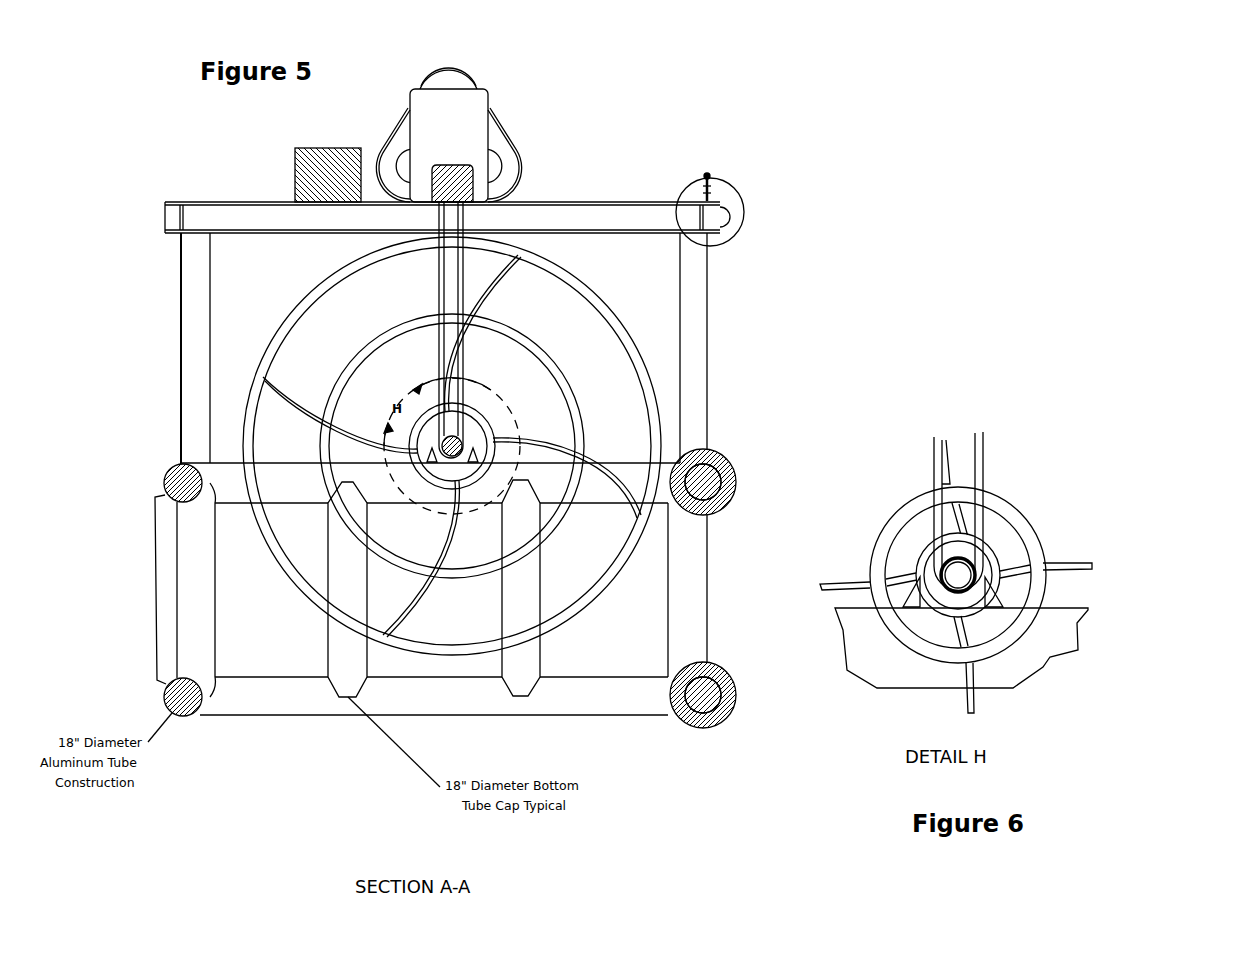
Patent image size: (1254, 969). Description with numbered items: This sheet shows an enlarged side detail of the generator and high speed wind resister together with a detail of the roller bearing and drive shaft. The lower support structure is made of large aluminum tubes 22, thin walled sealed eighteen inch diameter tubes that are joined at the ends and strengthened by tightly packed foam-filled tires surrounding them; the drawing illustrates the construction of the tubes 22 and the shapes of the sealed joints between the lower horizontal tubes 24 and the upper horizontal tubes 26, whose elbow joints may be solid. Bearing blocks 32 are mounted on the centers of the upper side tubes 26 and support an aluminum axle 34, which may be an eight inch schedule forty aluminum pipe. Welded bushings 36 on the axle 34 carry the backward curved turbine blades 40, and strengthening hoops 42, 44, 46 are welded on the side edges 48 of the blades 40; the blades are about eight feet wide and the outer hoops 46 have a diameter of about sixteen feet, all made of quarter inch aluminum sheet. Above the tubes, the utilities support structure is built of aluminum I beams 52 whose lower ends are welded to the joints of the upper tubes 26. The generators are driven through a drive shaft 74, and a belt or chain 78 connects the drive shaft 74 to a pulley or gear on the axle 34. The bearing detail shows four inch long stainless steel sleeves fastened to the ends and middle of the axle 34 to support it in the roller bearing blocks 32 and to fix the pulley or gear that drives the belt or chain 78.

In FIG. 5, the aluminum tubes 22 is at (158, 588).
In FIG. 5, the lower horizontal tubes 24 is at (163, 697).
In FIG. 5, the upper horizontal tubes 26 is at (163, 483).
In FIG. 6, the bearing blocks 32 is at (993, 552).
In FIG. 6, the aluminum axle 34 is at (948, 582).
In FIG. 6, the welded bushings 36 is at (983, 597).
In FIG. 5, the backward curved turbine blades 40 is at (594, 446).
In FIG. 5, the strengthening hoop 42 is at (493, 427).
In FIG. 5, the strengthening hoop 44 is at (533, 338).
In FIG. 5, the outer hoops 46 is at (625, 323).
In FIG. 5, the side edges 48 is at (573, 445).
In FIG. 5, the aluminum I beams 52 is at (718, 192).
In FIG. 5, the drive shaft 74 is at (455, 435).
In FIG. 5, the belt or chain 78 is at (438, 303).